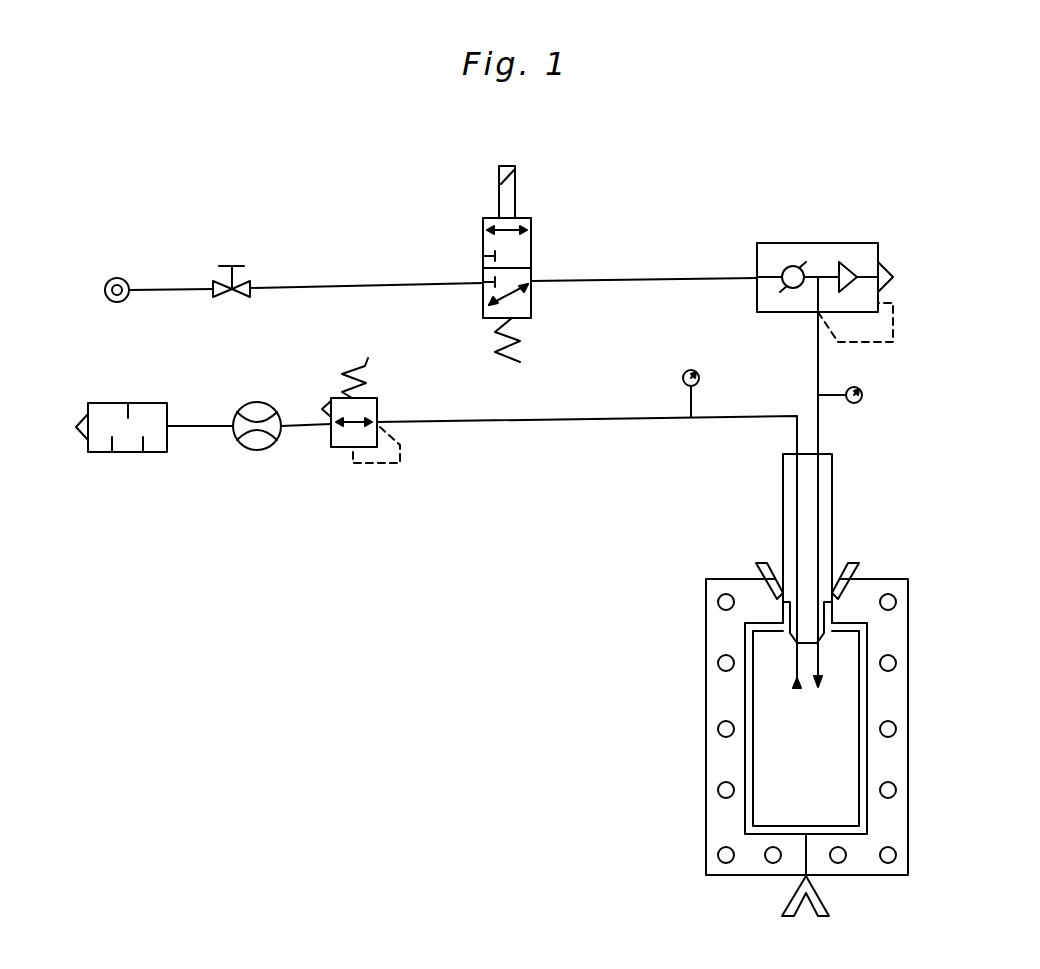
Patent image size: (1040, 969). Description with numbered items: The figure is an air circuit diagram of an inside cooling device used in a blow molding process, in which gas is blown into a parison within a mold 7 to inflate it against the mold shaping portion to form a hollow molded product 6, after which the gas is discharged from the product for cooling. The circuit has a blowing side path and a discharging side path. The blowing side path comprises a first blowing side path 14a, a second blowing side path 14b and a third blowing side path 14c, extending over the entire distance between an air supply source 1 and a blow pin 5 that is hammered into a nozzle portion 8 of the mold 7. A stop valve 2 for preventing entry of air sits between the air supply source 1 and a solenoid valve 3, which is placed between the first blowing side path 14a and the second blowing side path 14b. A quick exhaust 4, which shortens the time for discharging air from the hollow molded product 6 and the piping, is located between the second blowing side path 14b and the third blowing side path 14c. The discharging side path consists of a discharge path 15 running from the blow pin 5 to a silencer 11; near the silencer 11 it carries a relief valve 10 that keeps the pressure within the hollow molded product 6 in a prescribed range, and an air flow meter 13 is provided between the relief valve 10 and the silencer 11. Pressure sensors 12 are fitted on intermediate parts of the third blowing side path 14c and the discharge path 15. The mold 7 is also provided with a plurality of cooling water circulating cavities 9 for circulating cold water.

The air supply source 1 is at (117, 278).
The stop valve 2 is at (233, 262).
The solenoid valve 3 is at (531, 218).
The quick exhaust 4 is at (878, 243).
The blow pin 5 is at (833, 515).
The hollow molded product 6 is at (867, 642).
The mold 7 is at (908, 692).
The nozzle portion 8 is at (858, 566).
The cooling water circulating cavities 9 is at (896, 727).
The relief valve 10 is at (368, 358).
The silencer 11 is at (100, 403).
The pressure sensors 12 is at (690, 370).
The air flow meter 13 is at (251, 402).
The first blowing side path 14a is at (367, 283).
The second blowing side path 14b is at (655, 278).
The third blowing side path 14c is at (818, 365).
The discharge path 15 is at (578, 418).